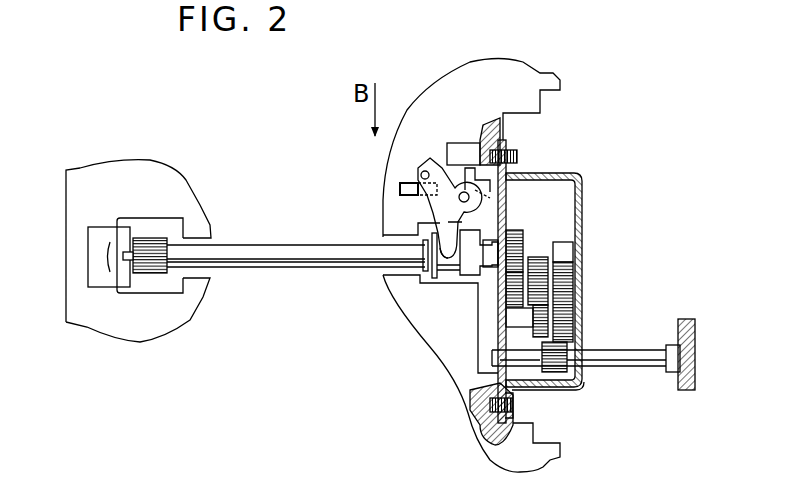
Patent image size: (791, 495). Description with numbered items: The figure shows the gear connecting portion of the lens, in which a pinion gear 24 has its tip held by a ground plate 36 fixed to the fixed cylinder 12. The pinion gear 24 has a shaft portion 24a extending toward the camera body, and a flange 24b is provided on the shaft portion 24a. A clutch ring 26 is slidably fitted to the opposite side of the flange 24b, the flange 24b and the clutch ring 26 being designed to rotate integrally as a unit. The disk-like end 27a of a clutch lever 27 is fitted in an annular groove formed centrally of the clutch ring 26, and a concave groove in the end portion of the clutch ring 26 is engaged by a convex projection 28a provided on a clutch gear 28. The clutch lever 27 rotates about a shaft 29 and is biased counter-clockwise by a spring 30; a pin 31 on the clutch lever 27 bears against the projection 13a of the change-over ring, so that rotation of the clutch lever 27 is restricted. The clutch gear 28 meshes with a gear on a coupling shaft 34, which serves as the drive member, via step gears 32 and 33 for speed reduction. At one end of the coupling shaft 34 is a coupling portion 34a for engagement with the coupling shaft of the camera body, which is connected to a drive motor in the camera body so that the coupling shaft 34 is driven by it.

The fixed cylinder 12 is at (132, 170).
The ground plate 36 is at (98, 253).
The pinion gear 24 is at (153, 268).
The shaft portion 24a is at (265, 262).
The flange 24b is at (427, 273).
The clutch ring 26 is at (445, 282).
The convex projection 28a is at (488, 281).
The shaft 29 is at (507, 192).
The clutch gear 28 is at (523, 232).
The step gear 32 is at (558, 281).
The step gear 33 is at (568, 308).
The coupling shaft 34 is at (633, 357).
The coupling portion 34a is at (690, 350).
The clutch lever 27 is at (420, 205).
The disk-like end 27a is at (418, 228).
The spring 30 is at (460, 192).
The pin 31 is at (423, 172).
The projection 13a is at (403, 183).